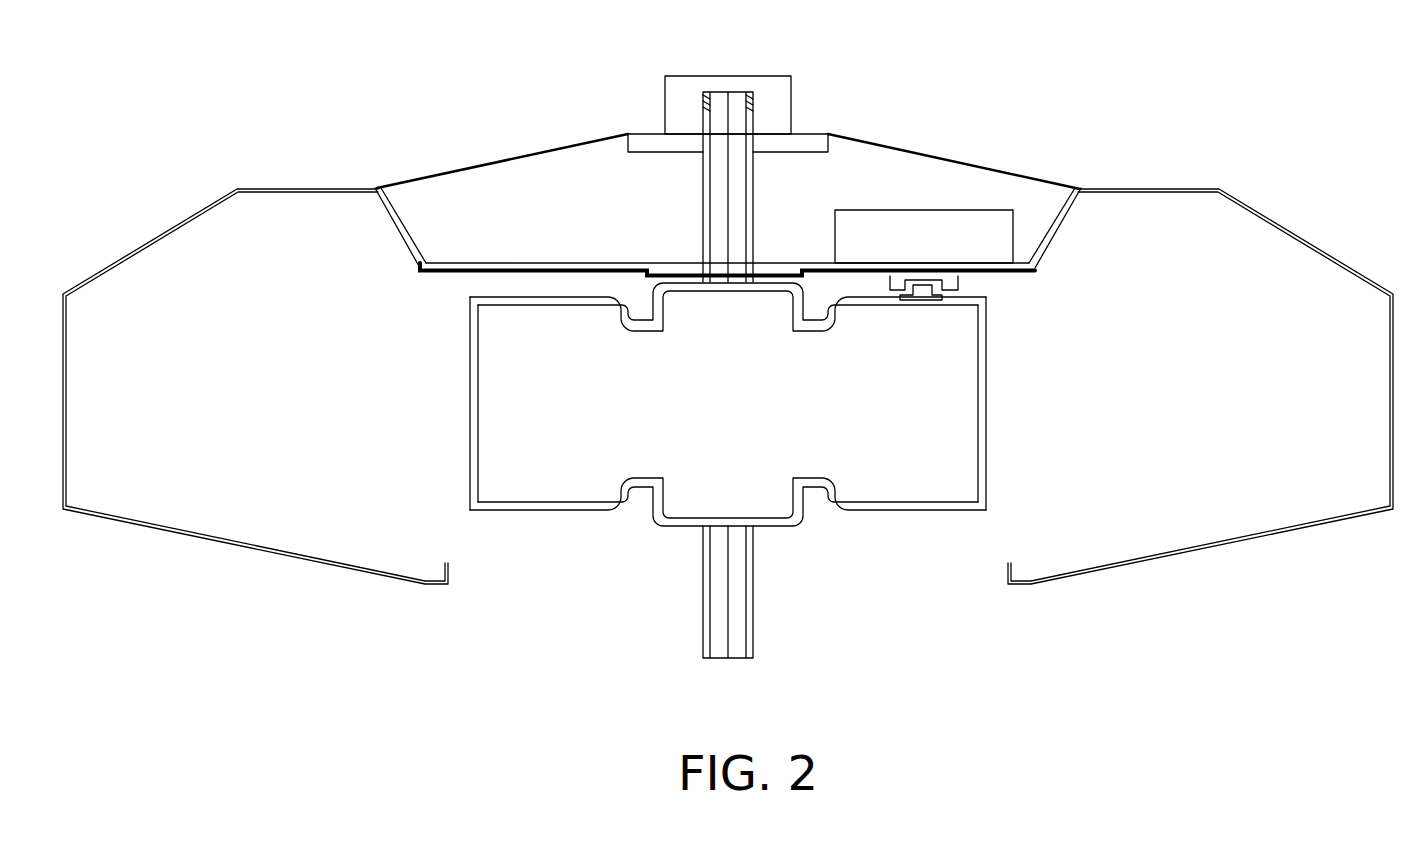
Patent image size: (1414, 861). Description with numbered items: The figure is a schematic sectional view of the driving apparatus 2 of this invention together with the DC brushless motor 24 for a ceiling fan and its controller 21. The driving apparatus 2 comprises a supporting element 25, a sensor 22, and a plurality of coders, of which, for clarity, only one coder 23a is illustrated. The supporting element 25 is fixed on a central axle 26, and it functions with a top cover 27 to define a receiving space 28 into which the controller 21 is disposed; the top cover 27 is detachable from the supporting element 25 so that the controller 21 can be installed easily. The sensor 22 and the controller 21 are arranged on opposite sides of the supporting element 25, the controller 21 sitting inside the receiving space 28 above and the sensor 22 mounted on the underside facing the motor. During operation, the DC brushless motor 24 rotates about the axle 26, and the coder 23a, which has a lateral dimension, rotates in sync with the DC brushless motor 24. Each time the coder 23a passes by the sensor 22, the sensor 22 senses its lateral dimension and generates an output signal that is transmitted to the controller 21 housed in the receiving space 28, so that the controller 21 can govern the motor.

The driving apparatus 2 is at (788, 348).
The controller 21 is at (905, 237).
The sensor 22 is at (948, 286).
The coder 23a is at (925, 293).
The DC brushless motor 24 is at (987, 482).
The supporting element 25 is at (1034, 273).
The axle 26 is at (728, 123).
The top cover 27 is at (1030, 174).
The receiving space 28 is at (852, 150).